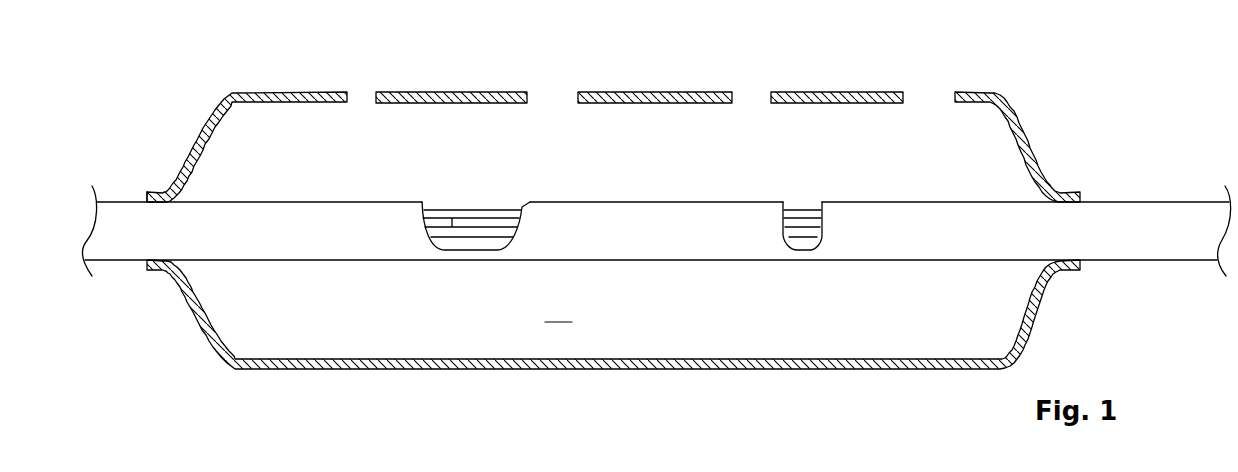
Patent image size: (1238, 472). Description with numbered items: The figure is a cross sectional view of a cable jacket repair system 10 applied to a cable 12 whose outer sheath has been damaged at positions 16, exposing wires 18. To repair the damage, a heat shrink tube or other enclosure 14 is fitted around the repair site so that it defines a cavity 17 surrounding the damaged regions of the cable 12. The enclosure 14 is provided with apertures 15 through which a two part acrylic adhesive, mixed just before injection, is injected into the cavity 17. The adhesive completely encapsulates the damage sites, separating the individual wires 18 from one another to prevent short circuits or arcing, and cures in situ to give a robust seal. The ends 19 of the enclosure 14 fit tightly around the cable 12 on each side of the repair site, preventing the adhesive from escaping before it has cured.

The exhaust system component / muffler assembly 10 is at (184, 95).
The cable 12 is at (1143, 262).
The enclosure 14 is at (580, 370).
The apertures 15 is at (552, 95).
The damage positions 16 is at (519, 198).
The cavity 17 is at (559, 311).
The wires 18 is at (451, 218).
The ends of the enclosure 19 is at (150, 192).